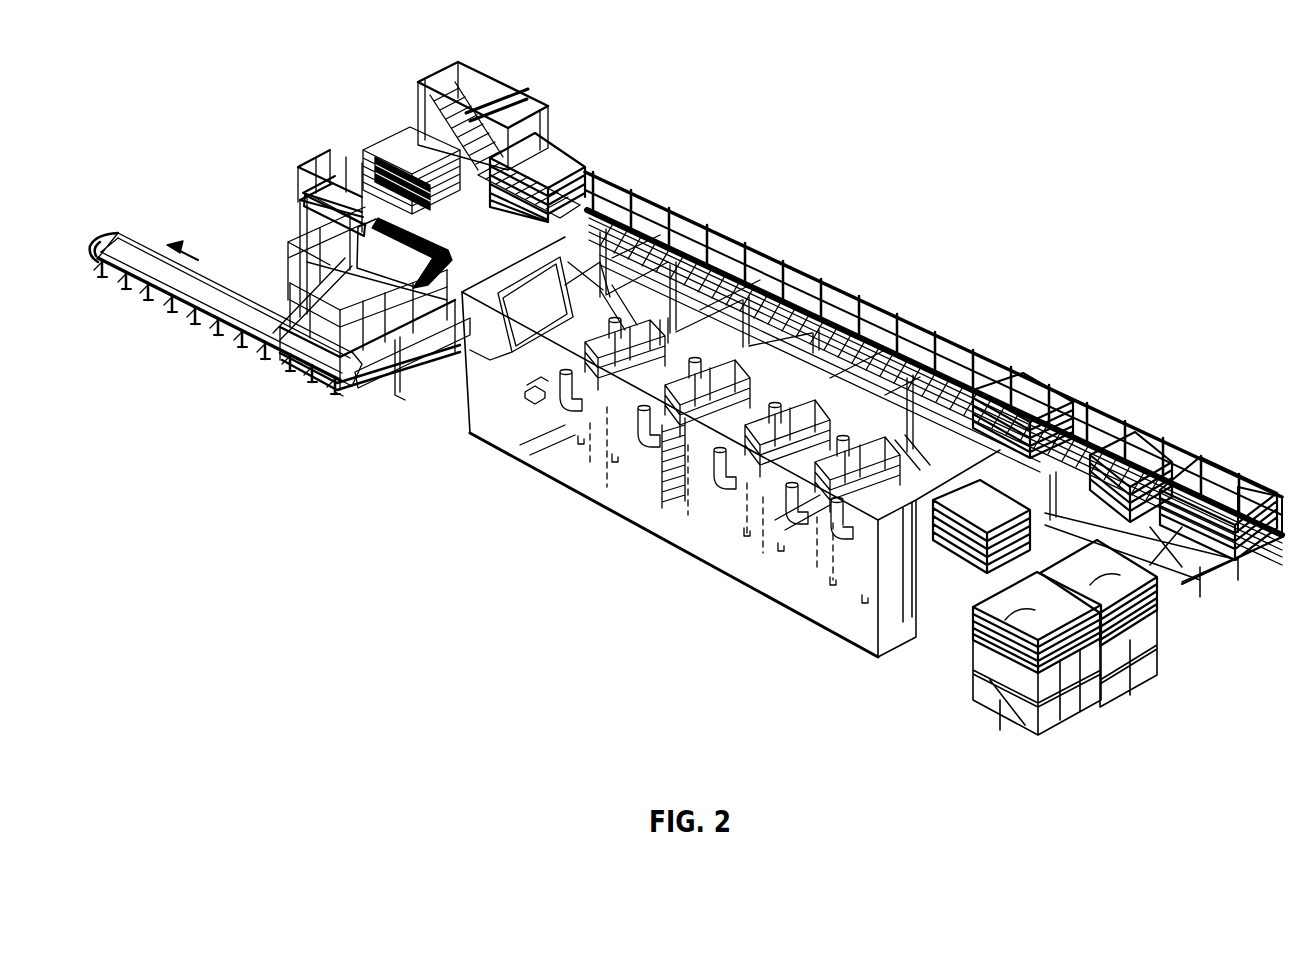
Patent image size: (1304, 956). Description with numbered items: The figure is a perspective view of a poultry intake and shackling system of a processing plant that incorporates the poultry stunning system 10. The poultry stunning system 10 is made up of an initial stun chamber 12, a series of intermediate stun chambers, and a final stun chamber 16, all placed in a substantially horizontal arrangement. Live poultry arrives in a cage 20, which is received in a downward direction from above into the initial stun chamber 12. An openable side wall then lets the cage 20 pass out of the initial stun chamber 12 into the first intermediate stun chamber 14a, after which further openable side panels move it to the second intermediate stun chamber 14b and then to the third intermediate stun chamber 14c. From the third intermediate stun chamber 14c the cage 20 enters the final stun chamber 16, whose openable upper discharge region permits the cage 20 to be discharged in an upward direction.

The poultry stunning system 10 is at (686, 413).
The initial stun chamber 12 is at (862, 576).
The first intermediate stun chamber 14a is at (793, 540).
The second intermediate stun chamber 14b is at (710, 494).
The third intermediate stun chamber 14c is at (640, 455).
The final stun chamber 16 is at (550, 409).
The cage 20 is at (308, 240).